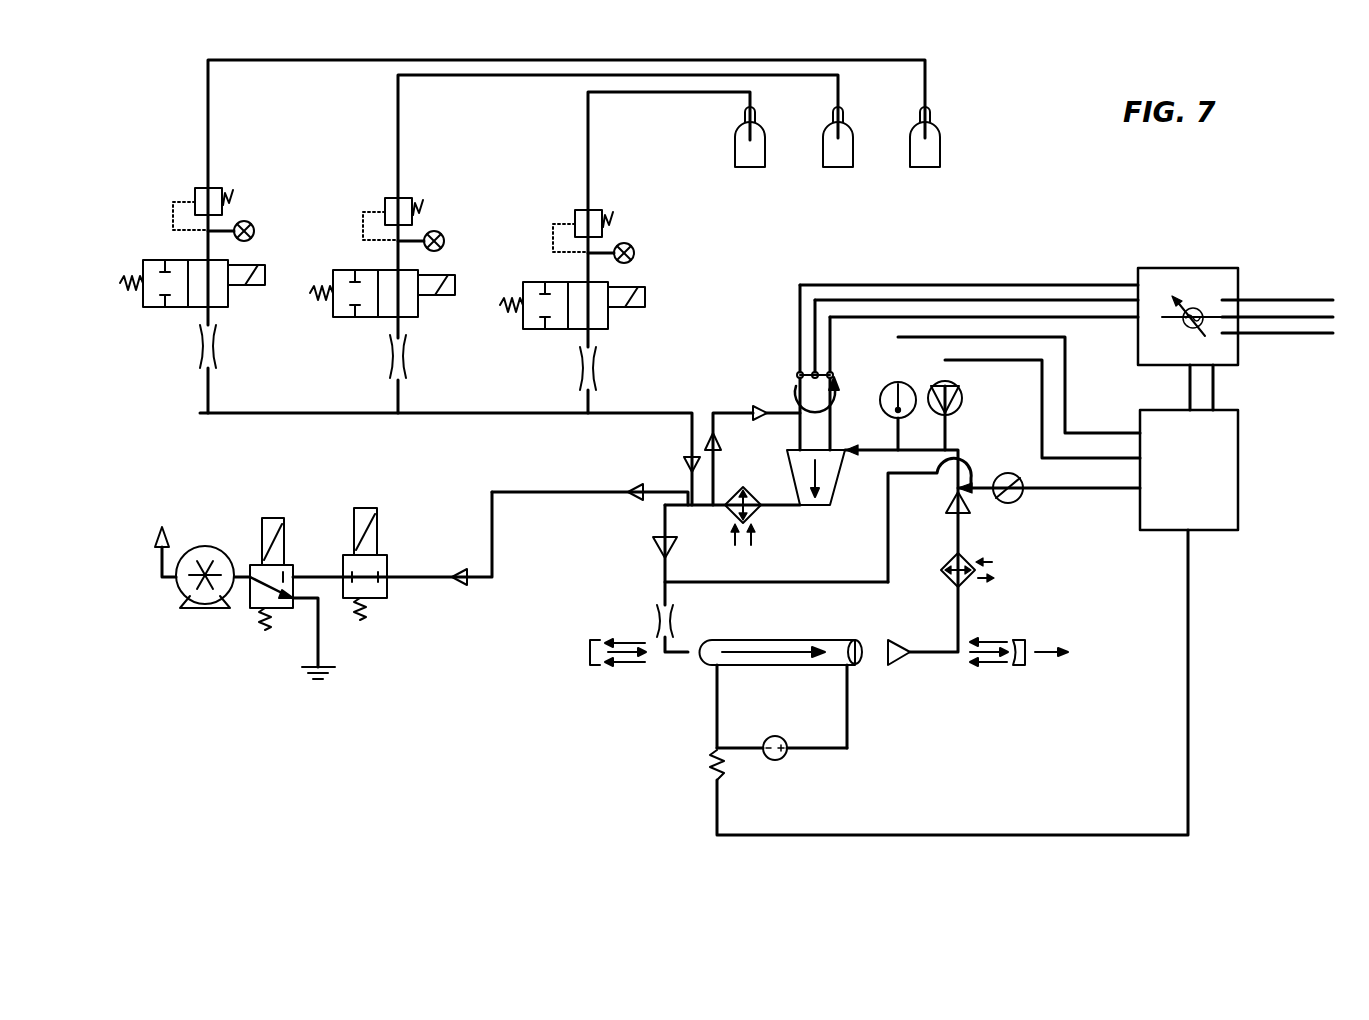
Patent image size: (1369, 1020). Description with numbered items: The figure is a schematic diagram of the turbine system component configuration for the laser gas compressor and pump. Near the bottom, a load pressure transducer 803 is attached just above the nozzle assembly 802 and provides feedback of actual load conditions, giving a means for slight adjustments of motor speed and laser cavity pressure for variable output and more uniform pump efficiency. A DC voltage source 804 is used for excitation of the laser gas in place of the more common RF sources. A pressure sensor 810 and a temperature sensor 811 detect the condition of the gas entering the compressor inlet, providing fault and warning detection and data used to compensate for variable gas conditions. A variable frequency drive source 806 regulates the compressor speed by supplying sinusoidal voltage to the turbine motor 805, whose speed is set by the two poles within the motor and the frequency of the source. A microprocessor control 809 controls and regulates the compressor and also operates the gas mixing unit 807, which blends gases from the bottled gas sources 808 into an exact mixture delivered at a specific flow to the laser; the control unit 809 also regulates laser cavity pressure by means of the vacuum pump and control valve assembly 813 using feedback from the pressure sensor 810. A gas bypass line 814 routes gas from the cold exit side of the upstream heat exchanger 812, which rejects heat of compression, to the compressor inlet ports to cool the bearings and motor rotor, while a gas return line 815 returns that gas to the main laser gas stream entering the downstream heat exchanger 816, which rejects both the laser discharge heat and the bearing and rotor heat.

The nozzle assembly 802 is at (658, 618).
The load pressure transducer 803 is at (1018, 499).
The DC voltage source 804 is at (785, 760).
The motor 805 is at (797, 375).
The variable frequency drive source 806 is at (1187, 268).
The gas mixing unit 807 is at (138, 217).
The bottled gas sources 808 is at (942, 150).
The microprocessor control 809 is at (1240, 475).
The pressure sensor 810 is at (962, 398).
The temperature sensor 811 is at (890, 382).
The upstream heat exchanger 812 is at (758, 512).
The vacuum pump and control valve assembly 813 is at (212, 686).
The gas bypass line 814 is at (822, 582).
The gas return line 815 is at (660, 532).
The downstream heat exchanger 816 is at (962, 585).